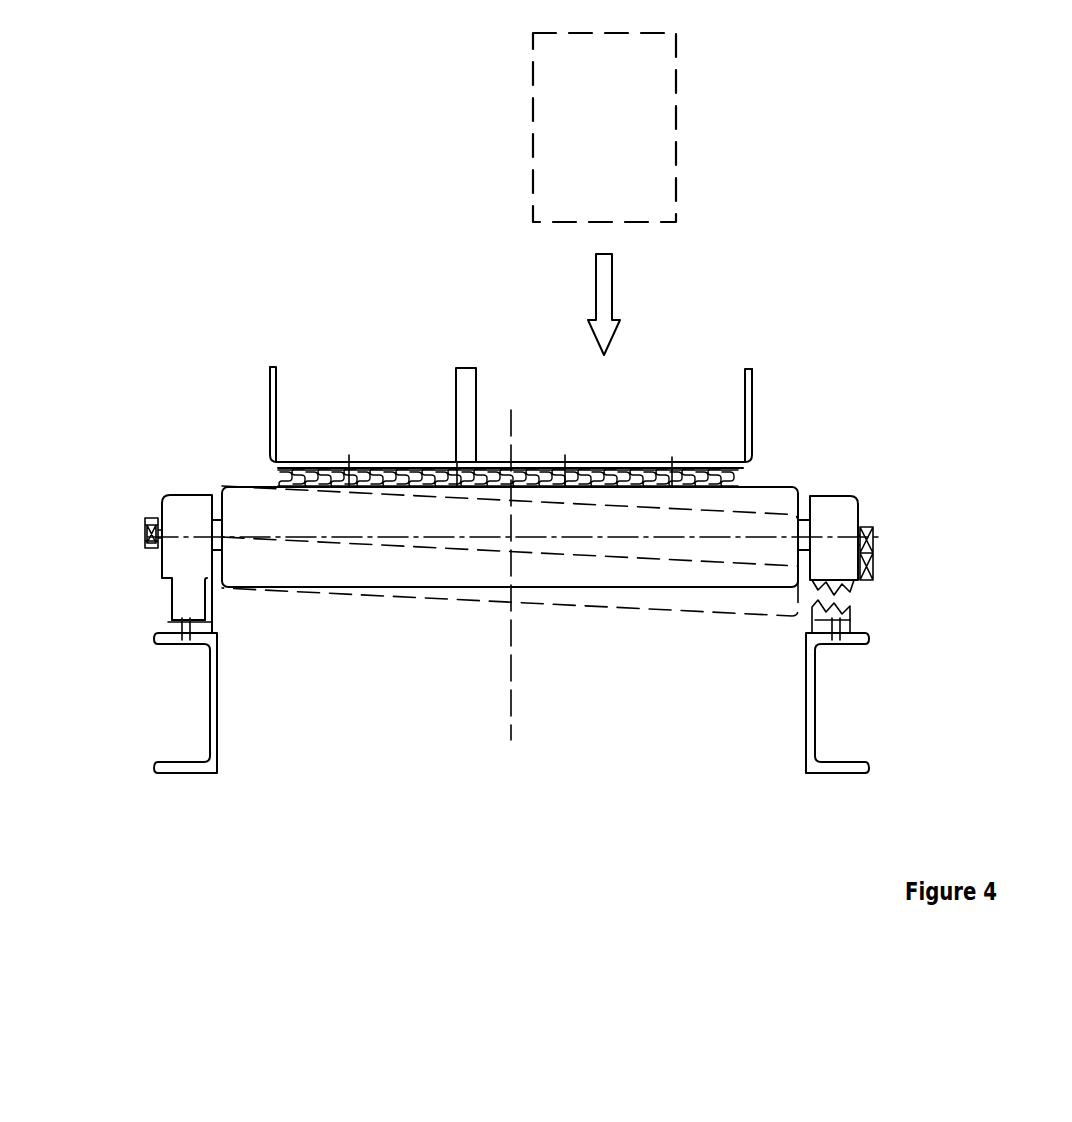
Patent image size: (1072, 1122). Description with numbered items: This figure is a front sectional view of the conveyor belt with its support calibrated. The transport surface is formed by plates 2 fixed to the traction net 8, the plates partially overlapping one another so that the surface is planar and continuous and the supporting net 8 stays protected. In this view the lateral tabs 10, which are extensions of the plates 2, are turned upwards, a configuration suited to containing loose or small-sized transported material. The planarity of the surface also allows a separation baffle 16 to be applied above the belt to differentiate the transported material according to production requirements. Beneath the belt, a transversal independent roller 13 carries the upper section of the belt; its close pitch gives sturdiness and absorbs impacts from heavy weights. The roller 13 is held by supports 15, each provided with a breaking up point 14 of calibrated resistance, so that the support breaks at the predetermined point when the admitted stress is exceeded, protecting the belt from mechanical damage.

The plate 2 is at (610, 463).
The traction net 8 is at (278, 480).
The lateral tab 10 is at (752, 392).
The transversal independent roller 13 is at (277, 558).
The breaking up point 14 is at (194, 598).
The support 15 is at (860, 517).
The separation baffle 16 is at (455, 385).